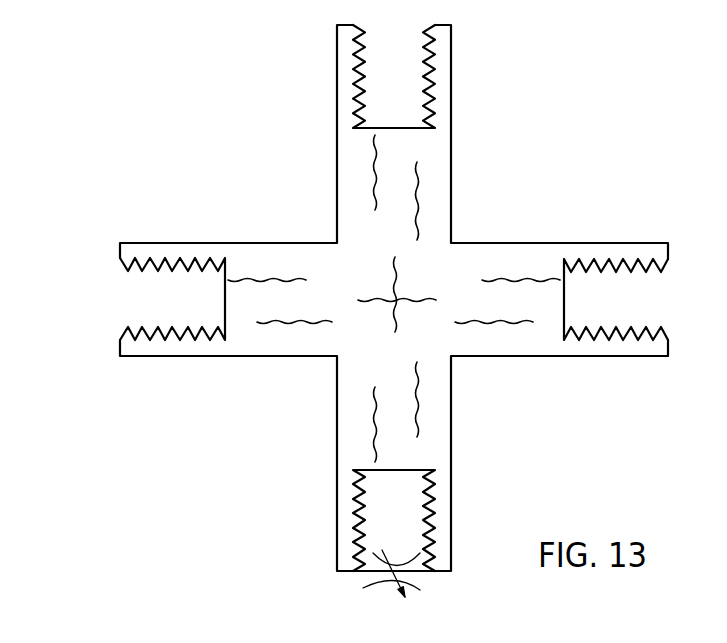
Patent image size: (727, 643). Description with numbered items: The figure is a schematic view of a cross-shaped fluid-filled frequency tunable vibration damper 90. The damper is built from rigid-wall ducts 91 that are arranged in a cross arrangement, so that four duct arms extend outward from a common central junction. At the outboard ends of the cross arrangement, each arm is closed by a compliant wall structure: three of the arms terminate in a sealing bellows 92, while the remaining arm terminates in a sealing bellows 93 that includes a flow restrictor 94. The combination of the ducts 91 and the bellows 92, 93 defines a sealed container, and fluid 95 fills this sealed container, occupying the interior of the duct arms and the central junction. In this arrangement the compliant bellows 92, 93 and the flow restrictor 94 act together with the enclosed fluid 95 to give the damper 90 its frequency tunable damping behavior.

The fluid-filled frequency tunable vibration damper 90 is at (103, 106).
The rigid-wall ducts 91 is at (451, 183).
The sealing bellows 92 is at (355, 50).
The sealing bellows 93 is at (355, 497).
The flow restrictor 94 is at (365, 586).
The fluid 95 is at (375, 182).